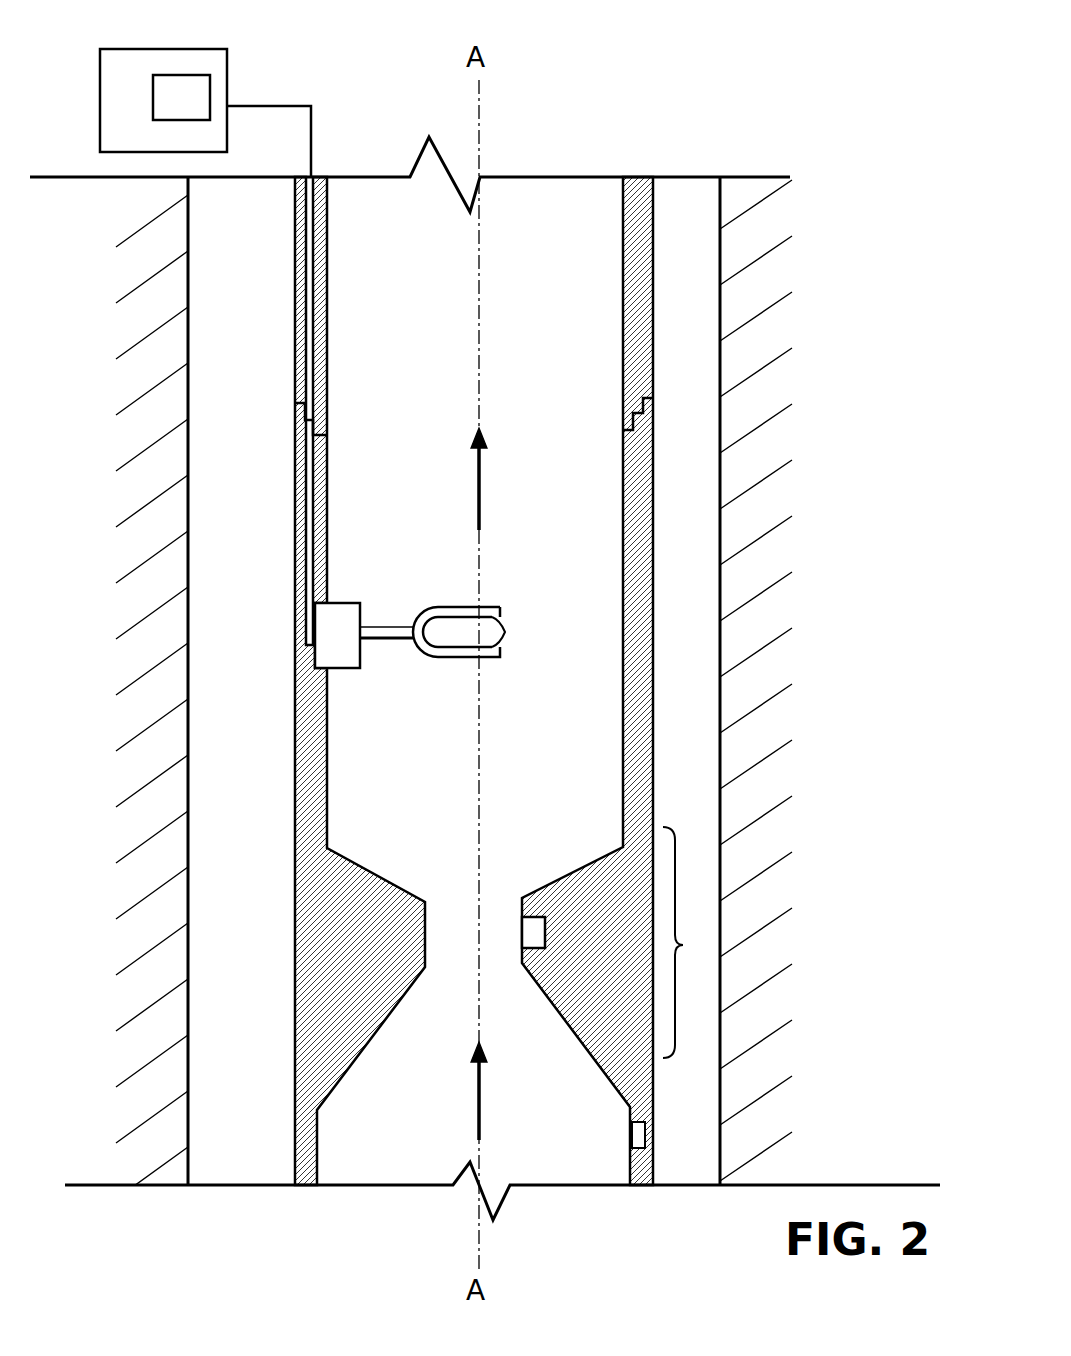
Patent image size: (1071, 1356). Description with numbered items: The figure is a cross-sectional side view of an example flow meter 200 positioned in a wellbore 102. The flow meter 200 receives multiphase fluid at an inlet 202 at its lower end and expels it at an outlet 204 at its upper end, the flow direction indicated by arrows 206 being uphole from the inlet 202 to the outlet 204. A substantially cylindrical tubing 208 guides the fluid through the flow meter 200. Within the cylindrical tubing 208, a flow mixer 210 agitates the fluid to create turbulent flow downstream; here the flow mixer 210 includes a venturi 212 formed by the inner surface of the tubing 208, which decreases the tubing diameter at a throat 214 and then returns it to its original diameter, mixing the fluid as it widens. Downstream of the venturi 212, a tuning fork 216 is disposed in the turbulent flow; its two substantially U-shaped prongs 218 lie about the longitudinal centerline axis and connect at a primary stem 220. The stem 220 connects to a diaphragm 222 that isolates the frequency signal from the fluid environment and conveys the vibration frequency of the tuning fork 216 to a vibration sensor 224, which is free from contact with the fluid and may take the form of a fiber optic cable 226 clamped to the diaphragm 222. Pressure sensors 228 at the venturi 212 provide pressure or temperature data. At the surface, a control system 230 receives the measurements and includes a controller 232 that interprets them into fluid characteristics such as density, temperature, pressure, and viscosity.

The wellbore 102 is at (692, 185).
The flow meter 200 is at (690, 495).
The inlet 202 is at (548, 1166).
The outlet 204 is at (528, 452).
The arrows 206 is at (477, 473).
The cylindrical tubing 208 is at (655, 661).
The flow mixer 210 is at (541, 681).
The venturi 212 is at (683, 945).
The throat 214 is at (412, 935).
The tuning fork 216 is at (416, 697).
The prongs 218 is at (505, 632).
The primary stem 220 is at (388, 627).
The diaphragm 222 is at (348, 603).
The vibration sensor 224 is at (302, 628).
The fiber optic cable 226 is at (312, 487).
The pressure sensors 228 is at (632, 1133).
The control system 230 is at (179, 92).
The controller 232 is at (175, 75).